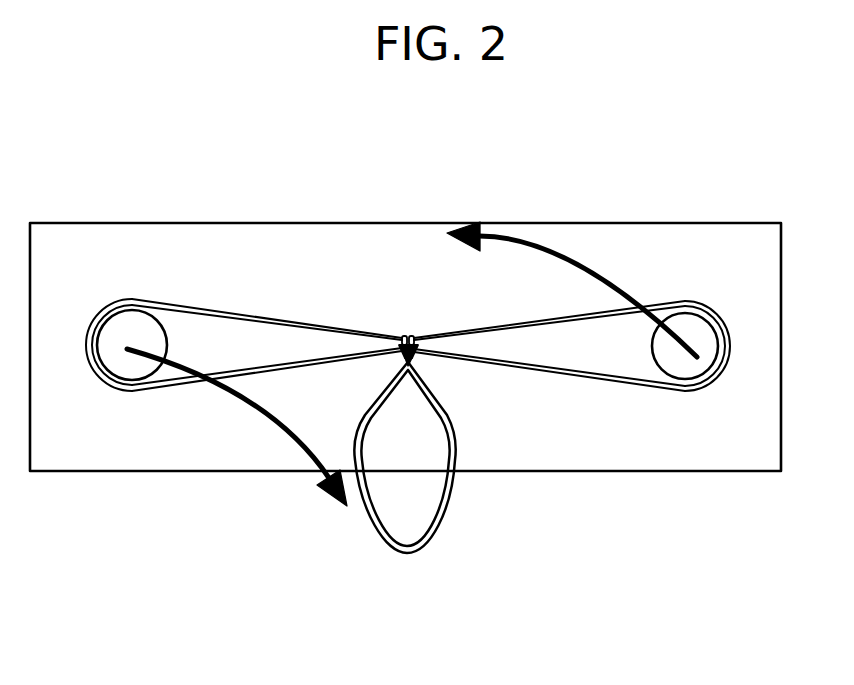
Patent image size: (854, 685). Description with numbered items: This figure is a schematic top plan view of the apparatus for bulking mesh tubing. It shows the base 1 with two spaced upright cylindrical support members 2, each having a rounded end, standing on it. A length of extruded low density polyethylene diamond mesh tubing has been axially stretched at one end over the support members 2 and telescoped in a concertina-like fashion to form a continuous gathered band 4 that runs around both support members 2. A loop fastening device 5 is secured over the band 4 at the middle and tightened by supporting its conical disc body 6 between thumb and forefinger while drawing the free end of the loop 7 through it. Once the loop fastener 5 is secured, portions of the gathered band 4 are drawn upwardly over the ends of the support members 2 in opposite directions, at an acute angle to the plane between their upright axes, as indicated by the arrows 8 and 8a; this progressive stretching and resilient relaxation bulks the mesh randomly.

The base 1 is at (178, 418).
The support members 2 is at (697, 340).
The gathered band 4 is at (215, 313).
The loop fastening device 5 is at (404, 334).
The conical disc body 6 is at (413, 360).
The loop 7 is at (447, 493).
The arrow 8 is at (560, 253).
The arrow 8a is at (257, 413).